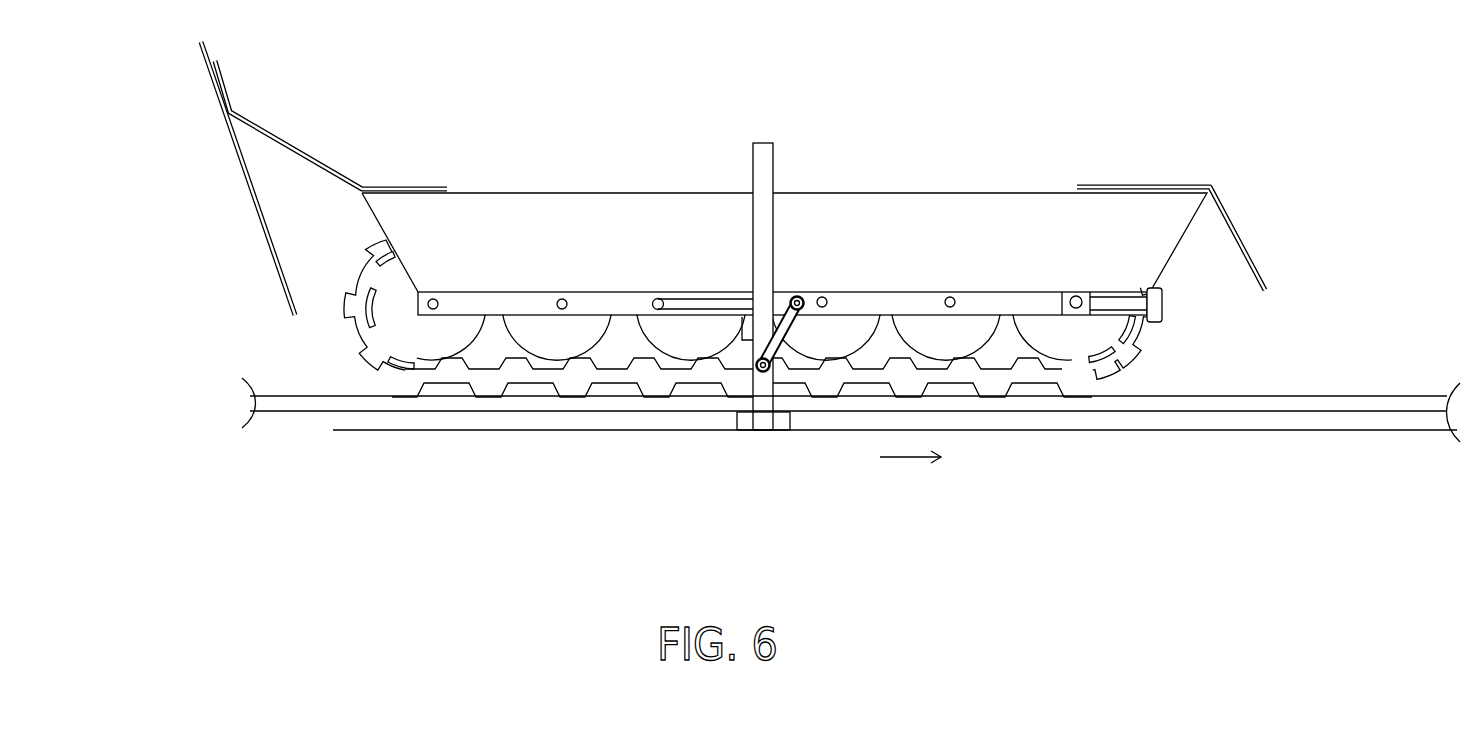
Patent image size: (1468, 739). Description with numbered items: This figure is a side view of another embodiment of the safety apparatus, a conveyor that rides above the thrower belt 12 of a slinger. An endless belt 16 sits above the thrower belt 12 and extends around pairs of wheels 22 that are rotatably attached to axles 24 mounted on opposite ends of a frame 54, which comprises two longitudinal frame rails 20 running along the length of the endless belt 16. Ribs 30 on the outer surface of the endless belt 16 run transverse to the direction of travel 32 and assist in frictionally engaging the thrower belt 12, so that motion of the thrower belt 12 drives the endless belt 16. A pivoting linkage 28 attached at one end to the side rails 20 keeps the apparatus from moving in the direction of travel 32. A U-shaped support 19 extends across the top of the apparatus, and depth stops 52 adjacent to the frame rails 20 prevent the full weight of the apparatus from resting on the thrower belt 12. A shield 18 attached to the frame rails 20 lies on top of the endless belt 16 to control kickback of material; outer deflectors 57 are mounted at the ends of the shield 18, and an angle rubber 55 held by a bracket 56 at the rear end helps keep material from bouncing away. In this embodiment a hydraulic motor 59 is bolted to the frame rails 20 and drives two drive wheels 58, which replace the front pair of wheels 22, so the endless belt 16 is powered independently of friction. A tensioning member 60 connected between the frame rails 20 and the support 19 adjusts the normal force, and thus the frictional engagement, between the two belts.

The thrower belt 12 is at (1185, 432).
The endless belt 16 is at (405, 378).
The shield 18 is at (513, 192).
The support 19 is at (760, 143).
The frame rails 20 is at (877, 302).
The wheels 22 is at (642, 335).
The axles 24 is at (953, 292).
The pivoting linkage 28 is at (680, 310).
The ribs 30 is at (1117, 370).
The direction of travel 32 is at (890, 458).
The depth stops 52 is at (740, 352).
The frame 54 is at (1003, 320).
The angle rubber 55 is at (250, 197).
The bracket 56 is at (308, 148).
The outer deflectors 57 is at (1235, 222).
The drive wheels 58 is at (1048, 333).
The hydraulic motor 59 is at (1073, 316).
The tensioning member 60 is at (787, 318).